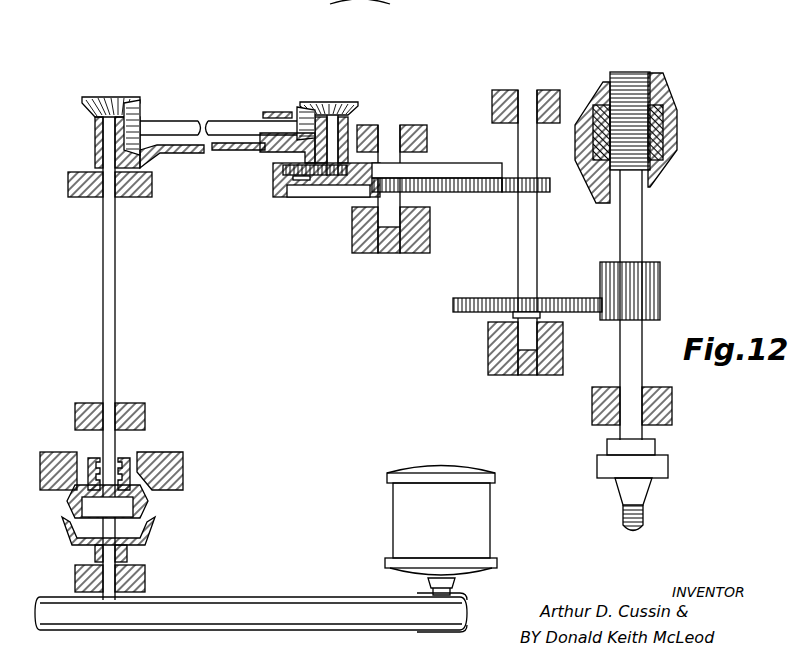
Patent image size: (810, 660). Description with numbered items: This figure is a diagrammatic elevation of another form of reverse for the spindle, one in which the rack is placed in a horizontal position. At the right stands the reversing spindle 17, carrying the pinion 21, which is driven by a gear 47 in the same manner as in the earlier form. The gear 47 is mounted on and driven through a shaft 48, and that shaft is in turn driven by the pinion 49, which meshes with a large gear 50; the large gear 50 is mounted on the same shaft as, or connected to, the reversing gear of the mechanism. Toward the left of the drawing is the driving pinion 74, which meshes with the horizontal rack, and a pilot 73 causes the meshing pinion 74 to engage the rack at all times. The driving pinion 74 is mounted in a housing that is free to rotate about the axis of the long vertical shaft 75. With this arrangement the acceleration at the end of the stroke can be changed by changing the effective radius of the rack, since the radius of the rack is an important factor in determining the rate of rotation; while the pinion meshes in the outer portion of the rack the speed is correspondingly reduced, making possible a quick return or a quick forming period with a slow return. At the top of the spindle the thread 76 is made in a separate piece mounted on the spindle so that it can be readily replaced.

The reversing spindle 17 is at (637, 240).
The pinion 21 is at (655, 283).
The gear 47 is at (547, 300).
The shaft 48 is at (527, 242).
The pinion 49 is at (557, 193).
The large gear 50 is at (455, 193).
The pilot 73 is at (328, 176).
The driving pinion 74 is at (342, 177).
The shaft 75 is at (108, 342).
The thread 76 is at (635, 80).